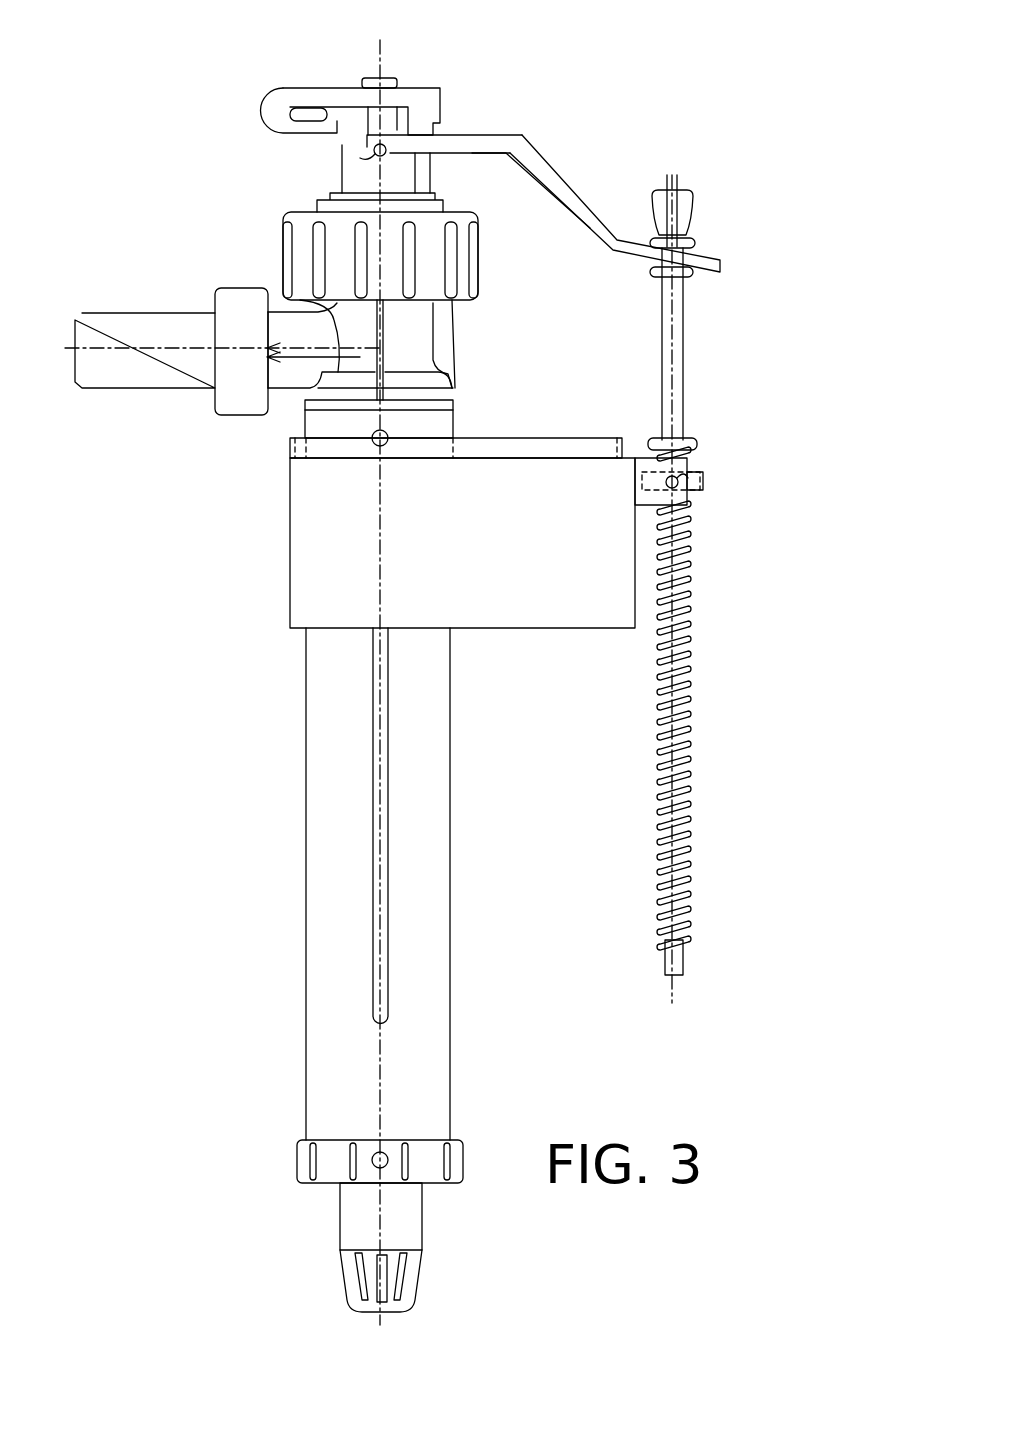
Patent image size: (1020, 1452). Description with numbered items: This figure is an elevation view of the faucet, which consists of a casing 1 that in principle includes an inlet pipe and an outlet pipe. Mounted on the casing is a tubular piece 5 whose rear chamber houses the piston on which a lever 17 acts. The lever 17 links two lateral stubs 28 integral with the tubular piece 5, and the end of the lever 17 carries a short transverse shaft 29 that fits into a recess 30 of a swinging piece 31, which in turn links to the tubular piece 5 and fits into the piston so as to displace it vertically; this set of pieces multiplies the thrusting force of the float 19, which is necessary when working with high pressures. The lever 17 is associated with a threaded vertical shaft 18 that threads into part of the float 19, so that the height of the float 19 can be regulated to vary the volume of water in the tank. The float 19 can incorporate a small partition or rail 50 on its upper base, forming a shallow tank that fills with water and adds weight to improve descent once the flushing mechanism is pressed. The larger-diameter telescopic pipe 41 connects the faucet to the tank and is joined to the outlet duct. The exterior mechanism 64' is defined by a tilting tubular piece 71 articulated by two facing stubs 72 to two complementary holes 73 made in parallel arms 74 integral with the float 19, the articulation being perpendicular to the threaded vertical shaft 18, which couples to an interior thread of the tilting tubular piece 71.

The casing 1 is at (240, 295).
The tubular piece 5 is at (433, 168).
The lever 17 is at (535, 155).
The vertical shaft 18 is at (678, 305).
The float 19 is at (290, 585).
The lateral stubs 28 is at (372, 151).
The short transverse shaft 29 is at (372, 148).
The recess 30 is at (302, 115).
The swinging piece 31 is at (333, 90).
The telescopic pipe 41 is at (450, 889).
The partition or rail 50 is at (290, 447).
The exterior mechanism 64' is at (771, 497).
The tilting tubular piece 71 is at (697, 490).
The facing stubs 72 is at (685, 472).
The complementary holes 73 is at (675, 490).
The parallel arms 74 is at (645, 498).